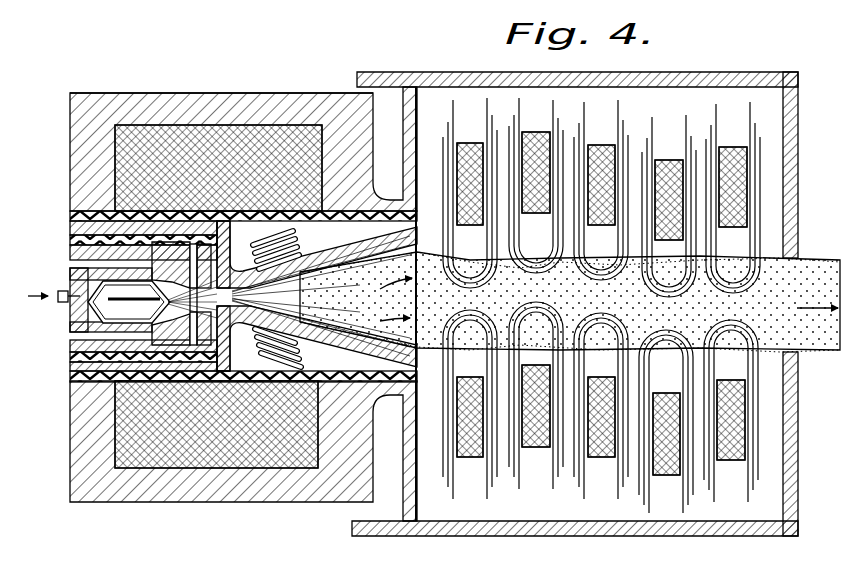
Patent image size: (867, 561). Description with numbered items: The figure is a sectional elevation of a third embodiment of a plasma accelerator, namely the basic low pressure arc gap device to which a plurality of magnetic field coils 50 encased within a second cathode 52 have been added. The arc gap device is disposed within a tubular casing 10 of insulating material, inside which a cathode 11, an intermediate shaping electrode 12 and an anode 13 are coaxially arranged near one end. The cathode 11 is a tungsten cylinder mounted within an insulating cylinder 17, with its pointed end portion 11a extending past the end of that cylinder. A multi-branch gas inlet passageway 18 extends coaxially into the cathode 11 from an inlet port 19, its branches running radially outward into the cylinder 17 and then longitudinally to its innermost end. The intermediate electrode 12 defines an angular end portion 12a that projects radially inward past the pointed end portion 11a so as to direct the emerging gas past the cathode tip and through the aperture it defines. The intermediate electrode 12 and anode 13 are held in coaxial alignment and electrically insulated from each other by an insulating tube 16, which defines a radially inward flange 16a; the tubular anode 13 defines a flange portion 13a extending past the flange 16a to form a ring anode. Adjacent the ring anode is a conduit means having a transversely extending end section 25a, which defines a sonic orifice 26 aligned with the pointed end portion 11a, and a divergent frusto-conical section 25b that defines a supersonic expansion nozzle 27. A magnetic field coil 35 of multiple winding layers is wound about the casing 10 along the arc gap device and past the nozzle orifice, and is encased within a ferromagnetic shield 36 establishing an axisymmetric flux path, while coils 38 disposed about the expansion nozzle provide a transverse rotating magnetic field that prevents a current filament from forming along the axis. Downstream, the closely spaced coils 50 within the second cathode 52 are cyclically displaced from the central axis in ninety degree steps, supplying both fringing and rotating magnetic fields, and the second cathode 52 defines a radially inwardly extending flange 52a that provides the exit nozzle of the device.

The tubular casing 10 is at (79, 210).
The cathode 11 is at (101, 295).
The pointed end portion 11a is at (134, 306).
The intermediate shaping electrode 12 is at (75, 246).
The angular end portion 12a is at (168, 240).
The anode 13 is at (75, 226).
The flange portion 13a is at (244, 218).
The tube 16 is at (75, 362).
The flange 16a is at (194, 258).
The cylinder 17 is at (75, 343).
The multi-branch gas inlet passageway 18 is at (73, 322).
The inlet port 19 is at (73, 305).
The end section 25a is at (213, 362).
The frusto-conical section 25b is at (303, 364).
The sonic orifice 26 is at (232, 291).
The supersonic expansion nozzle 27 is at (352, 308).
The magnetic field coil 35 is at (240, 167).
The ferromagnetic shield 36 is at (284, 94).
The coils 38 is at (262, 240).
The magnetic field coils 50 is at (548, 121).
The second cathode 52 is at (508, 70).
The flange 52a is at (795, 190).